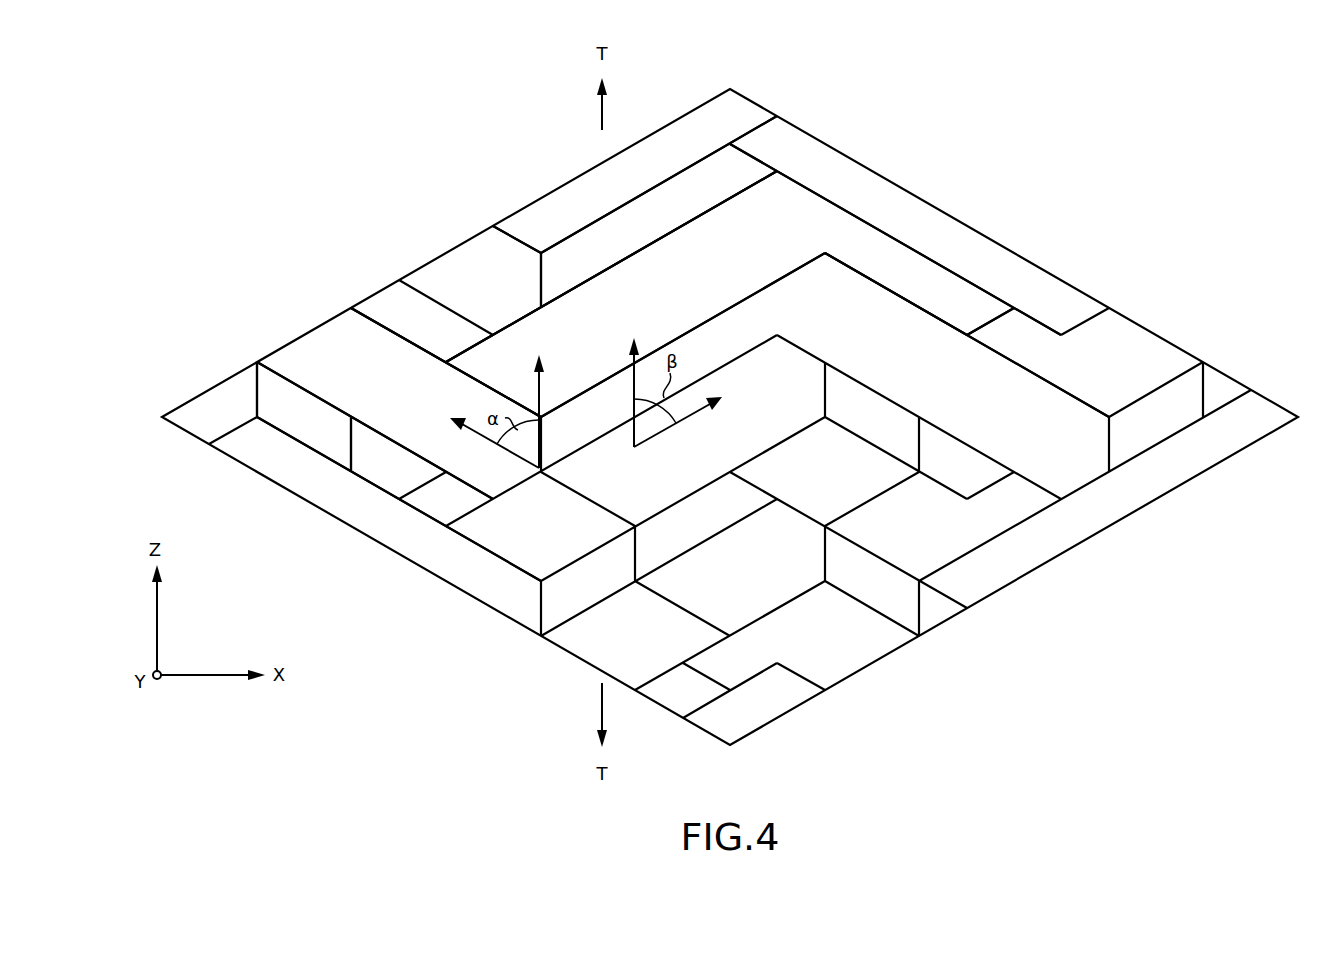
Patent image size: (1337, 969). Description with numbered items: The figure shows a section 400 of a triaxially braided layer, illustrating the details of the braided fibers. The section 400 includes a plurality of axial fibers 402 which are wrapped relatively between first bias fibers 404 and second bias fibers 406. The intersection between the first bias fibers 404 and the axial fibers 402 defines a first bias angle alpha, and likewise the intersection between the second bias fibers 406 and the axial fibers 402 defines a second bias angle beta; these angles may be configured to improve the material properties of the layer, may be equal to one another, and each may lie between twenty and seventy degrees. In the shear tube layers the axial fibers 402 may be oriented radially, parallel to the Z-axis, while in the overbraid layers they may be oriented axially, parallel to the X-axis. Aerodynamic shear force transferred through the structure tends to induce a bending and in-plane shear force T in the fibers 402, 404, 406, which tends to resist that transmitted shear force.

The section of triaxially braided layer 400 is at (966, 146).
The axial fibers 402 is at (563, 260).
The first bias fibers 404 is at (337, 337).
The second bias fibers 406 is at (647, 297).